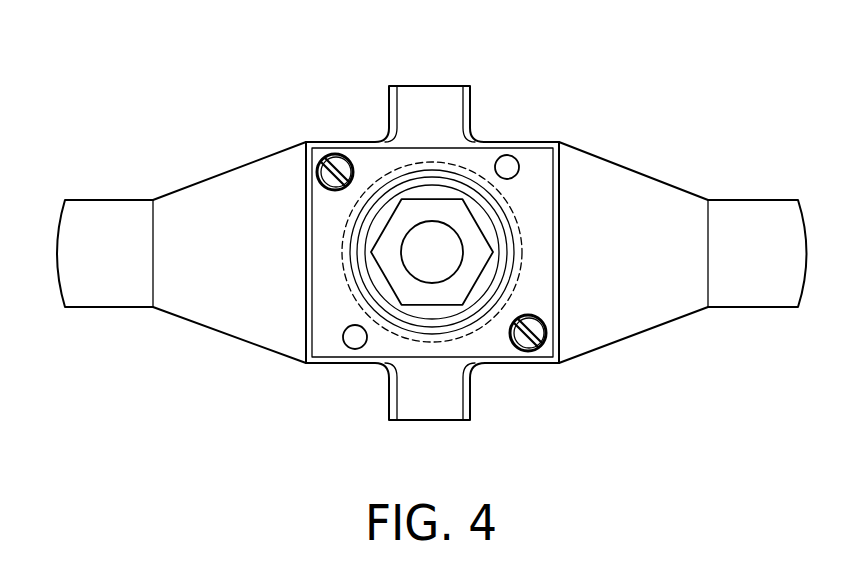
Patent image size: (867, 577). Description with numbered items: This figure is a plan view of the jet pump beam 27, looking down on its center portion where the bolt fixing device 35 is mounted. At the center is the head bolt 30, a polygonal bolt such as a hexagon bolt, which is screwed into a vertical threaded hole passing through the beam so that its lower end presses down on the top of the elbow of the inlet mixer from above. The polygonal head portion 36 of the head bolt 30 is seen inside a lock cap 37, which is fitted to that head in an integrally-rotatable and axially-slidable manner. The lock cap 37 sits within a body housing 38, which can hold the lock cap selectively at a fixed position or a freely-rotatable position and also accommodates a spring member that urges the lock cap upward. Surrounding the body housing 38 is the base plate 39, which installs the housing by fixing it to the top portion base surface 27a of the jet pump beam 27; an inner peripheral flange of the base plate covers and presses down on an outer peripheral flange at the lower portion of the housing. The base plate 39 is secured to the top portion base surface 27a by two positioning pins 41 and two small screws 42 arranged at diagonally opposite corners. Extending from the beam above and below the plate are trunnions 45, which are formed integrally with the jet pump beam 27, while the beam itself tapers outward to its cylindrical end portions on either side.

The jet pump beam 27 is at (688, 190).
The top portion base surface 27a is at (310, 364).
The head bolt 30 is at (450, 198).
The bolt fixing device 35 is at (508, 203).
The polygonal head portion 36 is at (390, 222).
The lock cap 37 is at (370, 237).
The body housing 38 is at (357, 259).
The base plate 39 is at (332, 295).
The positioning pins 41 is at (510, 156).
The small screws 42 is at (334, 154).
The trunnion 45 is at (433, 86).